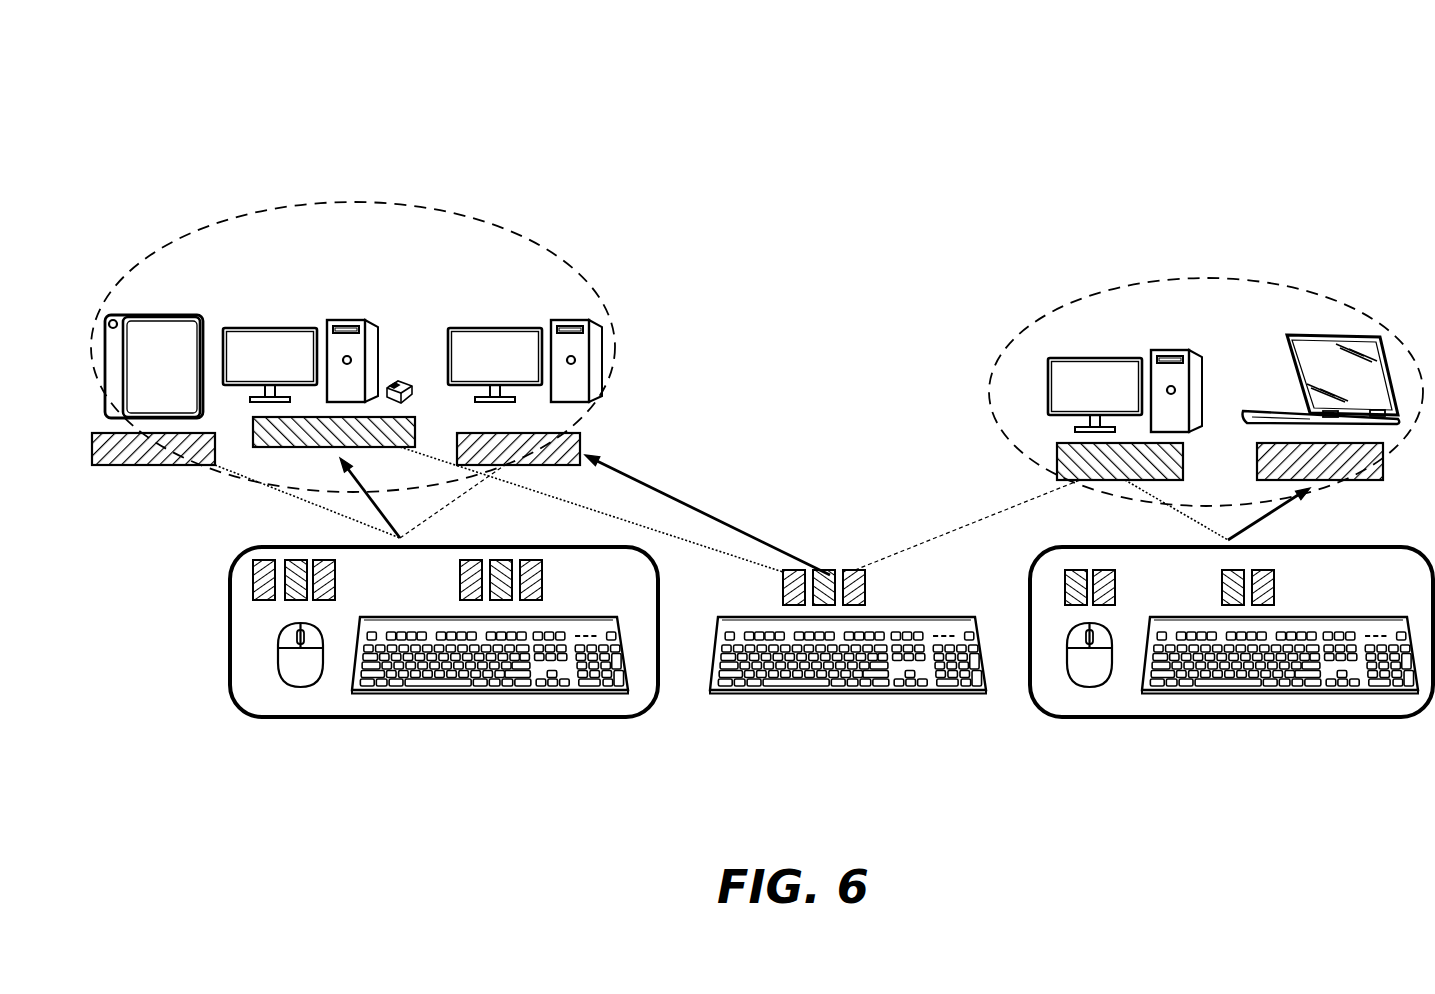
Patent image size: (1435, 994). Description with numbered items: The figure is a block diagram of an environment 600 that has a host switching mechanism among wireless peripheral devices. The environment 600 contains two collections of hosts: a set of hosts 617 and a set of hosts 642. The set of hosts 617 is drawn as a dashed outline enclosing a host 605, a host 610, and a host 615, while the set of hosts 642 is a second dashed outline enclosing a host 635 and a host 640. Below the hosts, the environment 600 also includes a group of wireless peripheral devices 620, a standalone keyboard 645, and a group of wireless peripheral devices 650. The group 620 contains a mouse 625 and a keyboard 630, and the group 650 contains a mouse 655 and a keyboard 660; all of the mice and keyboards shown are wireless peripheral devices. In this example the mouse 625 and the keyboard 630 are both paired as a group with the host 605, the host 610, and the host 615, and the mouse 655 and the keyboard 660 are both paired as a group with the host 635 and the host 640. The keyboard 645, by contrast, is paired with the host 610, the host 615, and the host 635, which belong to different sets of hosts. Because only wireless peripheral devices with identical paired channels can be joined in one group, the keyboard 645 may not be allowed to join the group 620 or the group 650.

The environment 600 is at (224, 74).
The host 605 is at (163, 316).
The host 610 is at (346, 320).
The host 615 is at (574, 320).
The set of hosts 617 is at (587, 410).
The group of wireless peripheral devices 620 is at (444, 645).
The mouse 625 is at (300, 687).
The keyboard 630 is at (505, 695).
The host 635 is at (1174, 350).
The host 640 is at (1329, 335).
The set of hosts 642 is at (1317, 488).
The keyboard 645 is at (877, 697).
The group of wireless peripheral devices 650 is at (1231, 645).
The mouse 655 is at (1089, 687).
The keyboard 660 is at (1290, 695).